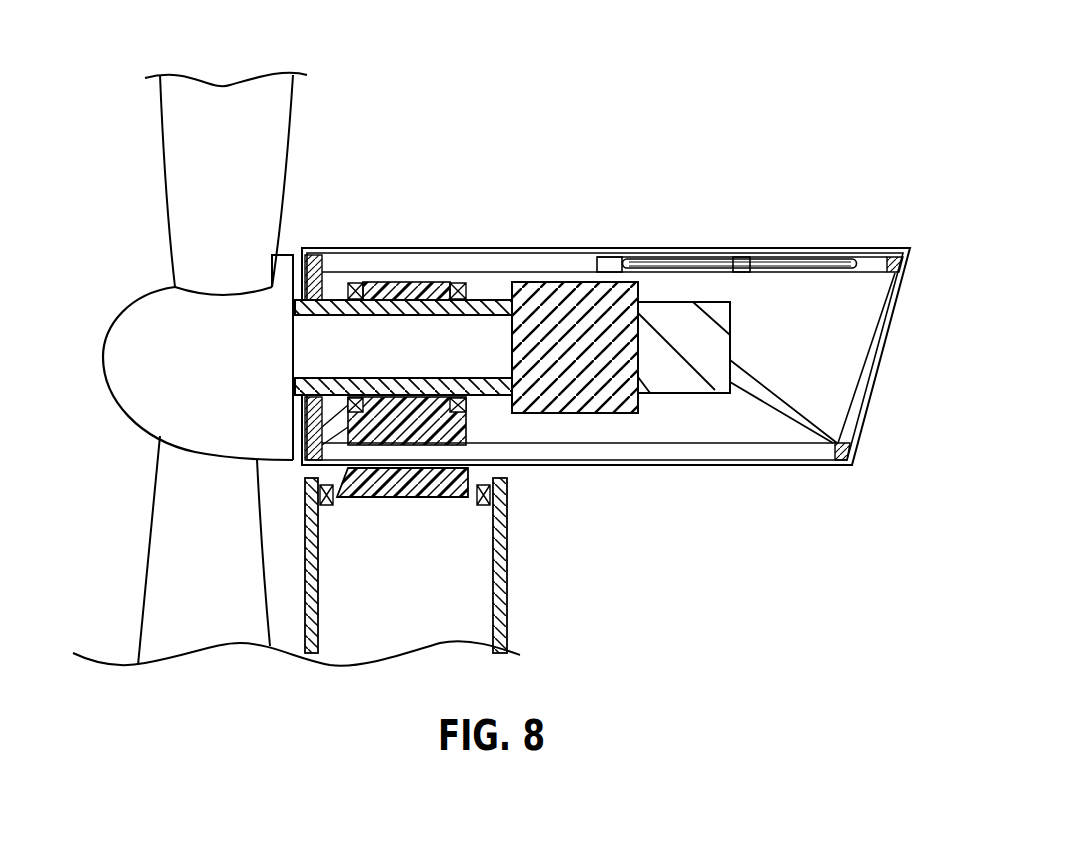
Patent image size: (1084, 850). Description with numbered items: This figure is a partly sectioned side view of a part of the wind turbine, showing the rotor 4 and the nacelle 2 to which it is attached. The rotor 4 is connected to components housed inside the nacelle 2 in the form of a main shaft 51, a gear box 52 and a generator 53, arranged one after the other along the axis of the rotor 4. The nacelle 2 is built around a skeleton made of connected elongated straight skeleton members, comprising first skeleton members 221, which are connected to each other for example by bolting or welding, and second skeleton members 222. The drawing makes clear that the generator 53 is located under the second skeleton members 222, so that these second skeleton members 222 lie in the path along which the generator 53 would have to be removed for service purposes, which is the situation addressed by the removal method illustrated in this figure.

The nacelle 2 is at (877, 247).
The rotor 4 is at (132, 300).
The main shaft 51 is at (410, 310).
The gear box 52 is at (577, 400).
The generator 53 is at (682, 382).
The first skeleton members 221 is at (490, 267).
The second skeleton members 222 is at (688, 263).